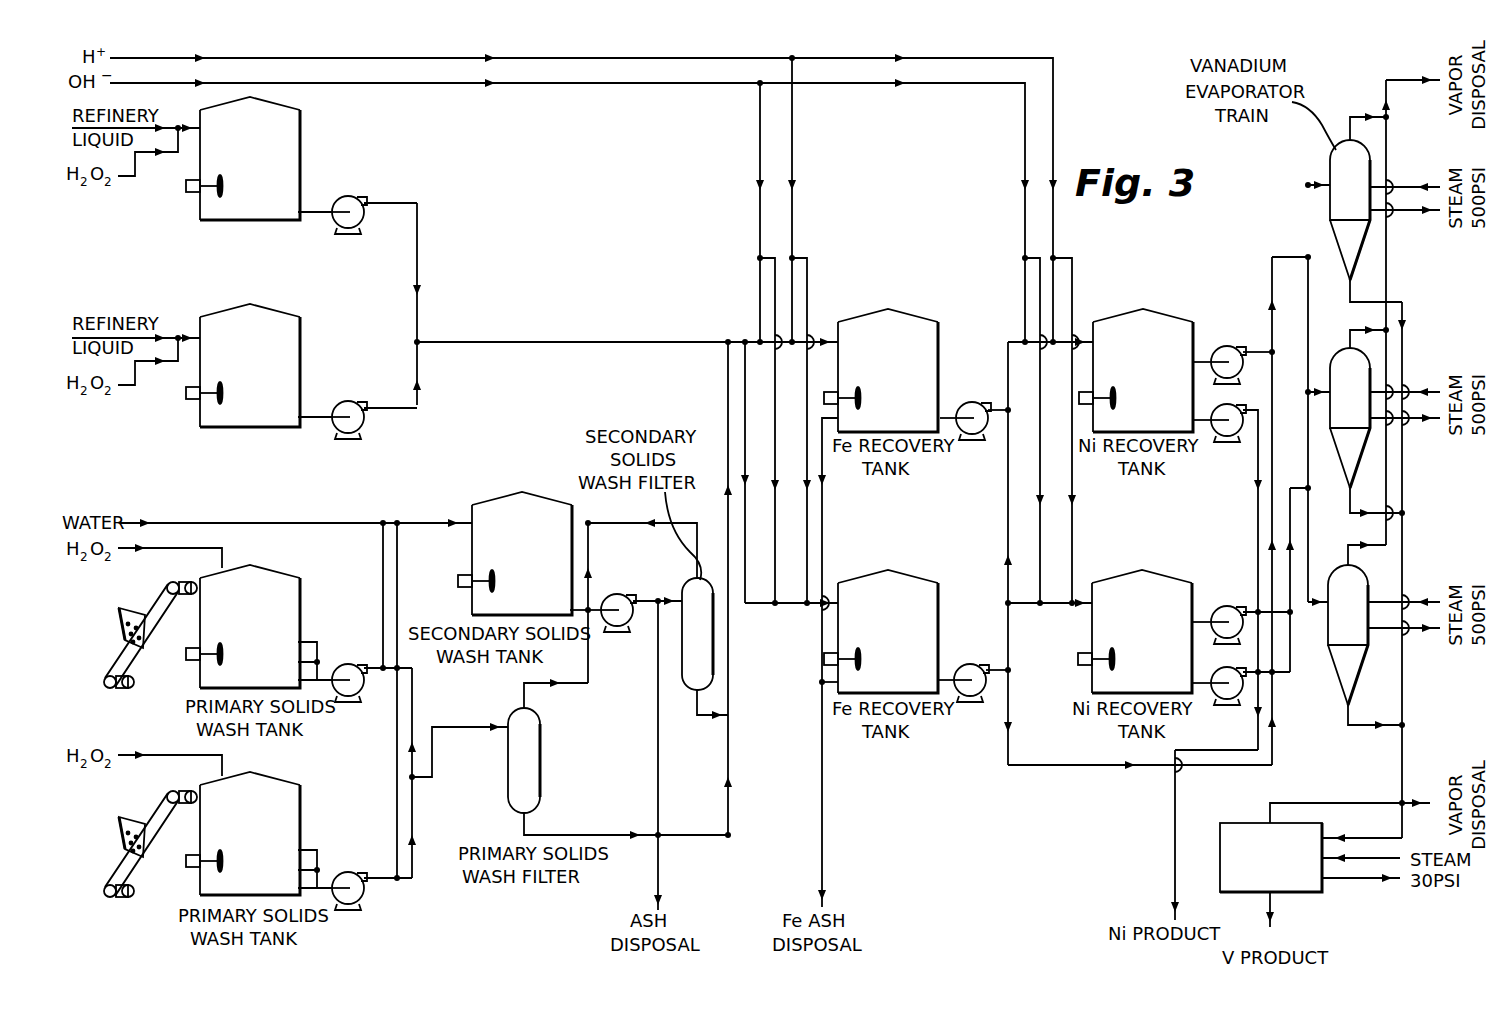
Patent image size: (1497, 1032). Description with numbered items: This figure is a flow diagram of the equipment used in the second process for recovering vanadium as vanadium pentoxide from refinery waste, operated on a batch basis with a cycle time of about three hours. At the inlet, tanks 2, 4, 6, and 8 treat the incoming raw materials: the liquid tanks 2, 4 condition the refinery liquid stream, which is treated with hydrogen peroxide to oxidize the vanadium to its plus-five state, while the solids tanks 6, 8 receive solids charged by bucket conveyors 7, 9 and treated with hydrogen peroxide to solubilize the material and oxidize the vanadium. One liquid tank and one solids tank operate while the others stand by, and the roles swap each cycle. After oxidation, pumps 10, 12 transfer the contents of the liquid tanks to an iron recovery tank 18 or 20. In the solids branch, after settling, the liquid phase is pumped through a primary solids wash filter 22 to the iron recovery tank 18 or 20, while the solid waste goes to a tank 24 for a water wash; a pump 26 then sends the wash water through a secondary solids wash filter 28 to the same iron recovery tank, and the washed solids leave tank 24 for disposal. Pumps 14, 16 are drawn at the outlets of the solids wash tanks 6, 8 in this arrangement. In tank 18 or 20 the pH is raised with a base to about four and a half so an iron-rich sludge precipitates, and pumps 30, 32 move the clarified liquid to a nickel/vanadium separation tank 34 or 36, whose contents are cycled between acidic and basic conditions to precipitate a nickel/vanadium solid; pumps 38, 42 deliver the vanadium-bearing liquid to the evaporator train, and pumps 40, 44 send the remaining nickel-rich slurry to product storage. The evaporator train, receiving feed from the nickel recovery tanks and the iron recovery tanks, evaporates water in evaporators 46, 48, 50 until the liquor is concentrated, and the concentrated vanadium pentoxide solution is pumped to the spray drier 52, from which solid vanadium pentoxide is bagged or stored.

The tank 2 is at (256, 172).
The tank 4 is at (256, 380).
The tank 6 is at (256, 640).
The bucket conveyor 7 is at (130, 610).
The tank 8 is at (256, 847).
The bucket conveyor 9 is at (140, 820).
The pump 10 is at (355, 198).
The pump 12 is at (345, 400).
The pump 14 is at (350, 664).
The pump 16 is at (348, 872).
The iron recovery tank 18 is at (900, 379).
The iron recovery tank 20 is at (900, 642).
The primary solids wash filter 22 is at (538, 792).
The tank 24 is at (536, 570).
The pump 26 is at (617, 634).
The secondary solids wash filter 28 is at (697, 700).
The pump 30 is at (968, 401).
The pump 32 is at (968, 664).
The nickel/vanadium separation tank 34 is at (1154, 382).
The nickel/vanadium separation tank 36 is at (1154, 644).
The pump 38 is at (1227, 345).
The pump 40 is at (1226, 441).
The pump 42 is at (1222, 606).
The pump 44 is at (1226, 705).
The evaporator 46 is at (1332, 162).
The evaporator 48 is at (1350, 448).
The evaporator 50 is at (1340, 655).
The spray drier 52 is at (1236, 823).